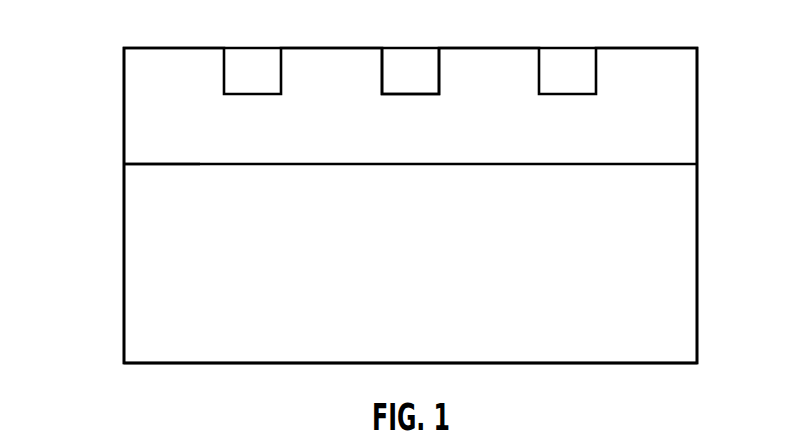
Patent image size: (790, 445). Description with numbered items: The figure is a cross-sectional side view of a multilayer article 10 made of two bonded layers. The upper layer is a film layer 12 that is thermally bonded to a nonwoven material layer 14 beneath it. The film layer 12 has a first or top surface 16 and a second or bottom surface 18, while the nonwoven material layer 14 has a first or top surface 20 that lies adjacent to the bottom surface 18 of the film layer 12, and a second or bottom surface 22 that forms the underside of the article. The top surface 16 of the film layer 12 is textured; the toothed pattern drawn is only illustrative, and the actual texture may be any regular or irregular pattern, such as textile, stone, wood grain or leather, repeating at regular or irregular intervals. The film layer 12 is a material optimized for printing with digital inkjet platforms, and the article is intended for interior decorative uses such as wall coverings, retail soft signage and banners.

The multilayer article 10 is at (83, 82).
The film layer 12 is at (680, 102).
The nonwoven material layer 14 is at (682, 263).
The top surface 16 is at (488, 47).
The bottom surface 18 is at (137, 165).
The top surface 20 is at (681, 162).
The bottom surface 22 is at (618, 365).